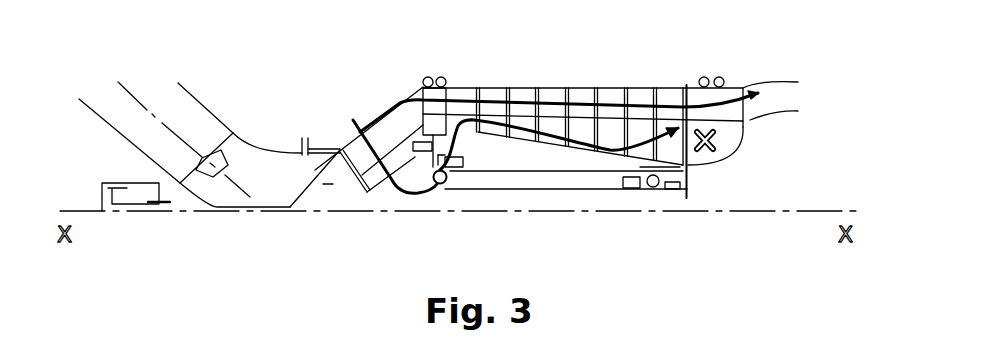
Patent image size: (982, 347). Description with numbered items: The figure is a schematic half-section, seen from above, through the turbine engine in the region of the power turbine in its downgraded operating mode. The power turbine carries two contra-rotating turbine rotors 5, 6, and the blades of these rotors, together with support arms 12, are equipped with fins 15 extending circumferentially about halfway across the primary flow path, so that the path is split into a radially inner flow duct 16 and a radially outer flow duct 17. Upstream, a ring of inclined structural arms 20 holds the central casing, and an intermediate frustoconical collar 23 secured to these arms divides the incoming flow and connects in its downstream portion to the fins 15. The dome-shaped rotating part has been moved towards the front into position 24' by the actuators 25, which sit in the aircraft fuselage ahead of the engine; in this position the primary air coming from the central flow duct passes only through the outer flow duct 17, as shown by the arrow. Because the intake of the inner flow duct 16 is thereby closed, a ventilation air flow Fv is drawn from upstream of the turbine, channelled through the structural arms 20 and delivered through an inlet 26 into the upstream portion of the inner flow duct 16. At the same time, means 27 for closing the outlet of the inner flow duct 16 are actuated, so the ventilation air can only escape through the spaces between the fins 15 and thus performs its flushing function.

The first turbine rotor 5 is at (579, 117).
The radially outer flow duct 17 is at (579, 88).
The fins 15 is at (612, 98).
The support arms 12 is at (700, 98).
The structural arms 20 is at (373, 127).
The intermediate frustoconical collar 23 is at (318, 160).
The forward position of rotating part 24' is at (315, 210).
The actuators 25 is at (133, 193).
The ventilation air inlet 26 is at (477, 123).
The second turbine rotor 6 is at (580, 146).
The radially inner flow duct 16 is at (623, 158).
The means for closing the outlet of the inner flow duct 27 is at (703, 160).
The ventilation air flow Fv is at (407, 194).